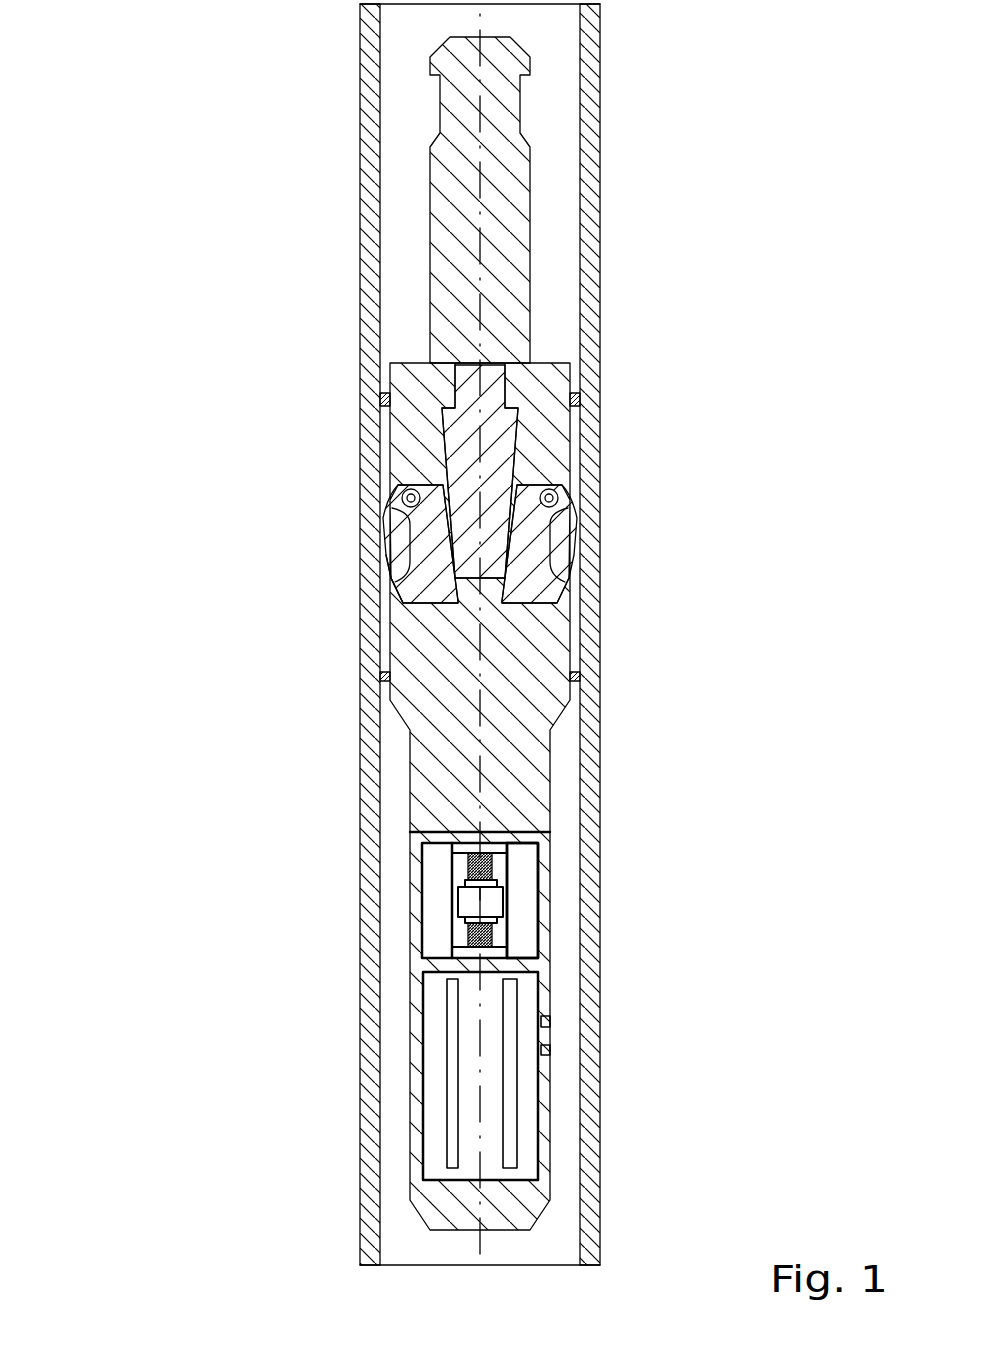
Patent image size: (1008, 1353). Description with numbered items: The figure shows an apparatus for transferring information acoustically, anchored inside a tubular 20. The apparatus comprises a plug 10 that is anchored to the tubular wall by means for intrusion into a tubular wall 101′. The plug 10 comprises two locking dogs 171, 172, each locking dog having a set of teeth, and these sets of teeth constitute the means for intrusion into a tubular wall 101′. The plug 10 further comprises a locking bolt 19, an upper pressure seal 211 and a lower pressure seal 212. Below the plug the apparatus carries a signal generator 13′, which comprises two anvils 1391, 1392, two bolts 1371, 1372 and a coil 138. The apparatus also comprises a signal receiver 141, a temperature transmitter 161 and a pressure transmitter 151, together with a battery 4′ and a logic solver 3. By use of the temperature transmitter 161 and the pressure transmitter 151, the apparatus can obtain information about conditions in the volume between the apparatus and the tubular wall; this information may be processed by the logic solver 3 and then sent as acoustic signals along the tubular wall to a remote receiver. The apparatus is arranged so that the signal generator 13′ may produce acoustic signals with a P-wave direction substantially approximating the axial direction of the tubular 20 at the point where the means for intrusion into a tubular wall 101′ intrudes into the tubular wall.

The plug 10 is at (550, 348).
The locking bolt 19 is at (556, 392).
The tubular 20 is at (600, 810).
The upper pressure seal 211 is at (383, 398).
The lower pressure seal 212 is at (386, 677).
The locking dog 171 is at (396, 492).
The locking dog 172 is at (548, 484).
The means for intrusion into a tubular wall 101′ is at (393, 560).
The signal generator 13′ is at (513, 901).
The signal receiver 141 is at (530, 912).
The anvil 1392 is at (465, 862).
The bolt 1372 is at (465, 880).
The coil 138 is at (458, 903).
The bolt 1371 is at (465, 920).
The anvil 1391 is at (468, 938).
The logic solver 3 is at (423, 1073).
The battery 4′ is at (517, 1128).
The temperature transmitter 161 is at (550, 1022).
The pressure transmitter 151 is at (550, 1052).